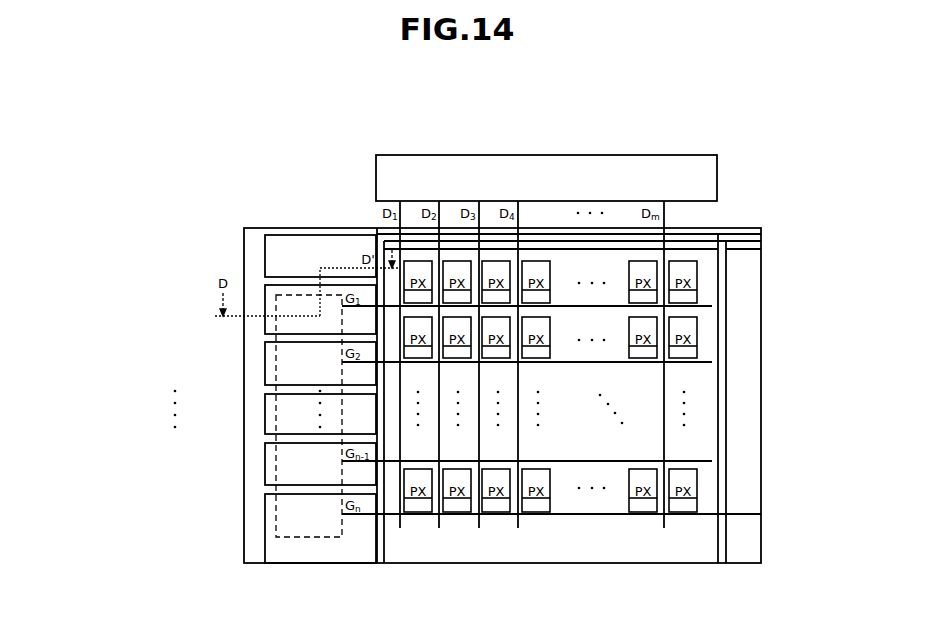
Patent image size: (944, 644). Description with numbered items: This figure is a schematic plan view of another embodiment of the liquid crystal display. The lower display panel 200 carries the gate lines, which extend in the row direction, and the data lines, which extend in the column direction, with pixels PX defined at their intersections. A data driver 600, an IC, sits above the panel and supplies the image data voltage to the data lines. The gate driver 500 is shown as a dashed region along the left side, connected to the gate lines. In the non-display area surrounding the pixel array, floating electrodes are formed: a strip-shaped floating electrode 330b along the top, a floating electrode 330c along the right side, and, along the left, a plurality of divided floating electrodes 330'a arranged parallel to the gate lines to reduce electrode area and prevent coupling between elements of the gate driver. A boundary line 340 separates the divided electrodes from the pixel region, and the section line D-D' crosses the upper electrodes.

The lower display panel 200 is at (281, 228).
The data driver 600 is at (586, 155).
The floating electrode 330b is at (700, 243).
The floating electrode 330c is at (757, 278).
The boundary line of display area 340 is at (381, 543).
The divided floating electrodes 330'a is at (229, 399).
The gate driver 500 is at (310, 537).